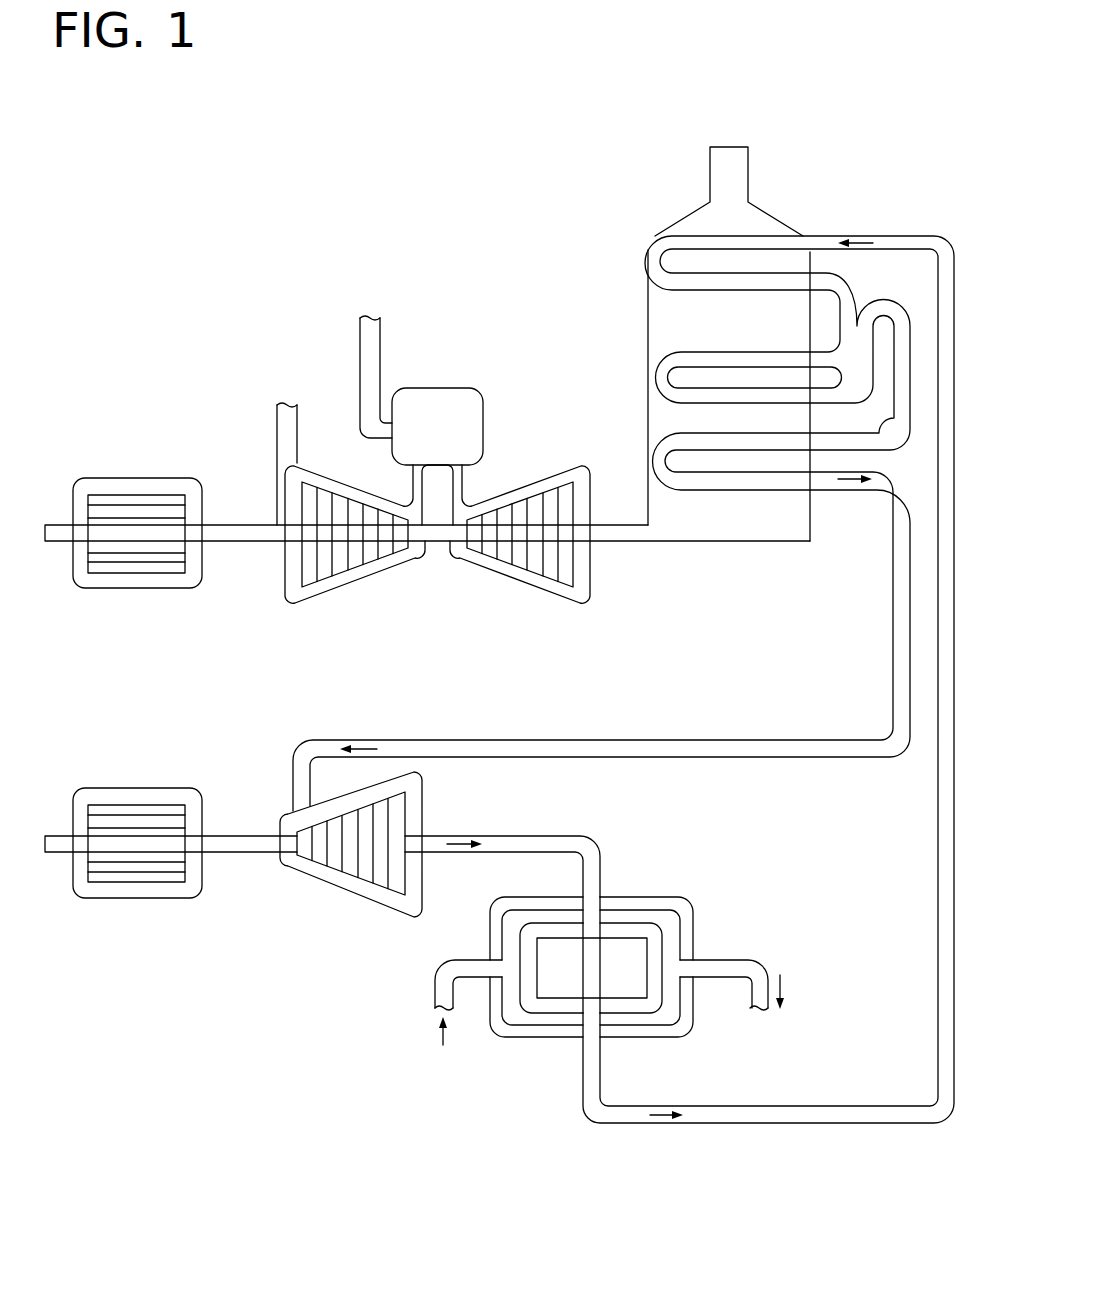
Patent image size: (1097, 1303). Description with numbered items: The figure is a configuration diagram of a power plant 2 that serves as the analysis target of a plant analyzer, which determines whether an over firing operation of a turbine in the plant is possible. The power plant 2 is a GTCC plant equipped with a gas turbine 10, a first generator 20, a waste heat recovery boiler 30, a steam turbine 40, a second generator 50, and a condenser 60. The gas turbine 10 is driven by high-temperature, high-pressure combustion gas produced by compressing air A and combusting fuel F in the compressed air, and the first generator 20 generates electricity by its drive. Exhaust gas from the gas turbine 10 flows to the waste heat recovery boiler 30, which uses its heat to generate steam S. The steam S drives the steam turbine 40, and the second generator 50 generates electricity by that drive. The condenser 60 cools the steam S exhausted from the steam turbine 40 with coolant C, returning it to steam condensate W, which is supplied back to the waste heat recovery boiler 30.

The power plant 2 is at (765, 92).
The gas turbine 10 is at (287, 388).
The first generator 20 is at (135, 588).
The waste heat recovery boiler 30 is at (720, 541).
The steam turbine 40 is at (318, 882).
The second generator 50 is at (135, 898).
The condenser 60 is at (527, 1037).